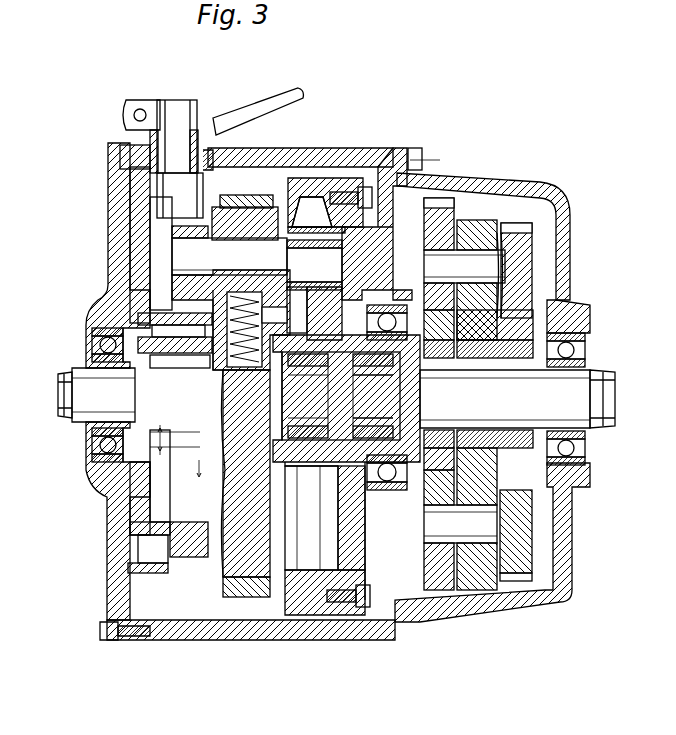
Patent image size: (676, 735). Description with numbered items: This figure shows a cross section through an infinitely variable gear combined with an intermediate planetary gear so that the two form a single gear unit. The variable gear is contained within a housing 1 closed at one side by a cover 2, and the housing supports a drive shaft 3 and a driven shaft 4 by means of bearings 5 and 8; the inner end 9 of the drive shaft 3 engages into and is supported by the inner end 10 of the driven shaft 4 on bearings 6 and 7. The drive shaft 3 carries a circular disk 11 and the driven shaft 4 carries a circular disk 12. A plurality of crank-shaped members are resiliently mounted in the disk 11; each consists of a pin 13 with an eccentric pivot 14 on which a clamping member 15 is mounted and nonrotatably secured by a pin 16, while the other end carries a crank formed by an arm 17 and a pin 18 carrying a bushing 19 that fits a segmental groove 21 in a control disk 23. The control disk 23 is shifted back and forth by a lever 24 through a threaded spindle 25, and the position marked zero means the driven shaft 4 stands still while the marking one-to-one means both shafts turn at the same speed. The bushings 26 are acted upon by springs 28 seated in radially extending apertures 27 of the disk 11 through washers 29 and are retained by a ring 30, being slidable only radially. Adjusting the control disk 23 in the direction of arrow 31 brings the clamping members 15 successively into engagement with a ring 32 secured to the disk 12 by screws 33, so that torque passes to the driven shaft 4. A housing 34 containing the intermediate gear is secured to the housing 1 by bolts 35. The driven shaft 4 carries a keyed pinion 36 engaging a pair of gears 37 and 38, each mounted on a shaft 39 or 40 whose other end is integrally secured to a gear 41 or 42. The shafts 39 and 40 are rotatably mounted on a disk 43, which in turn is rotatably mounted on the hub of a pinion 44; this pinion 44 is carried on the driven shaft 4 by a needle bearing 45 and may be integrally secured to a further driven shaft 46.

The housing 1 is at (328, 640).
The cover 2 is at (113, 590).
The drive shaft 3 is at (70, 420).
The driven shaft 4 is at (468, 403).
The bearing 5 is at (92, 344).
The bearing 6 is at (303, 372).
The bearing 7 is at (371, 372).
The bearing 8 is at (367, 325).
The inner end of drive shaft 9 is at (370, 436).
The inner end of shaft 10 is at (306, 468).
The circular disk 11 is at (240, 510).
The circular disk 12 is at (350, 530).
The pin 13 is at (184, 251).
The eccentric pivot 14 is at (334, 265).
The clamping member 15 is at (321, 200).
The pin 16 is at (296, 290).
The arm 17 is at (172, 230).
The pin 18 is at (186, 342).
The bushing 19 is at (161, 310).
The groove 21 is at (152, 565).
The control disk 23 is at (148, 497).
The lever 24 is at (281, 92).
The threaded spindle 25 is at (176, 130).
The bushing 26 is at (231, 210).
The radially extending aperture 27 is at (250, 370).
The spring 28 is at (204, 340).
The washer 29 is at (237, 290).
The ring 30 is at (267, 200).
The arrow 31 is at (178, 451).
The ring 32 is at (304, 178).
The screws 33 is at (370, 594).
The housing 34 is at (566, 258).
The bolts 35 is at (416, 148).
The pinion 36 is at (435, 378).
The gear 37 is at (432, 229).
The gear 38 is at (435, 557).
The shaft 39 is at (447, 264).
The shaft 40 is at (435, 520).
The gear 41 is at (516, 230).
The gear 42 is at (517, 573).
The disk 43 is at (477, 228).
The pinion 44 is at (502, 320).
The needle bearing 45 is at (490, 378).
The driven shaft 46 is at (597, 370).